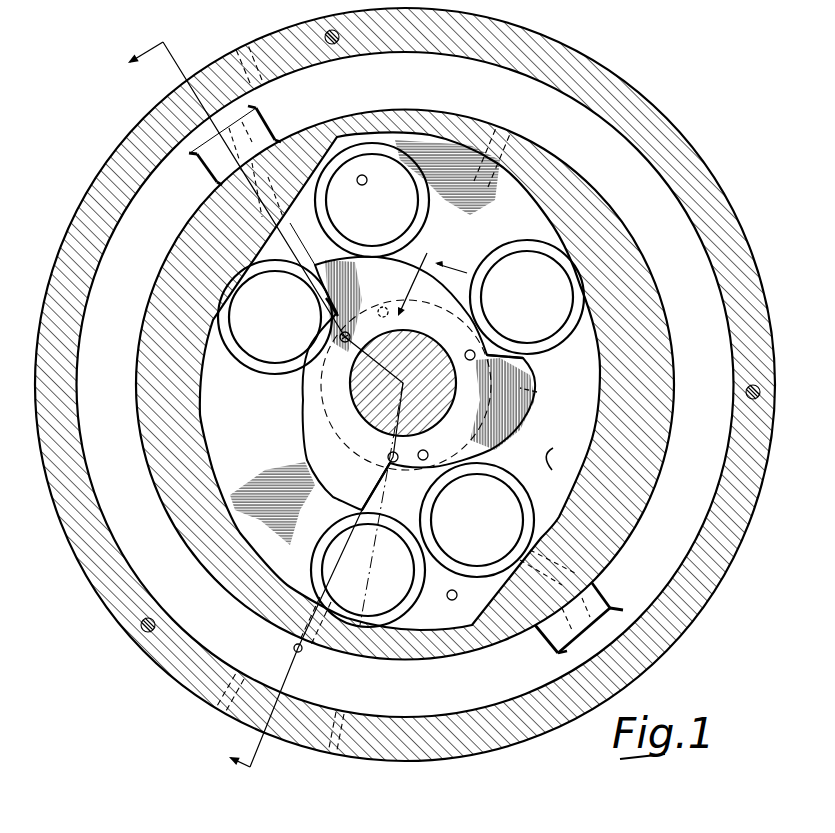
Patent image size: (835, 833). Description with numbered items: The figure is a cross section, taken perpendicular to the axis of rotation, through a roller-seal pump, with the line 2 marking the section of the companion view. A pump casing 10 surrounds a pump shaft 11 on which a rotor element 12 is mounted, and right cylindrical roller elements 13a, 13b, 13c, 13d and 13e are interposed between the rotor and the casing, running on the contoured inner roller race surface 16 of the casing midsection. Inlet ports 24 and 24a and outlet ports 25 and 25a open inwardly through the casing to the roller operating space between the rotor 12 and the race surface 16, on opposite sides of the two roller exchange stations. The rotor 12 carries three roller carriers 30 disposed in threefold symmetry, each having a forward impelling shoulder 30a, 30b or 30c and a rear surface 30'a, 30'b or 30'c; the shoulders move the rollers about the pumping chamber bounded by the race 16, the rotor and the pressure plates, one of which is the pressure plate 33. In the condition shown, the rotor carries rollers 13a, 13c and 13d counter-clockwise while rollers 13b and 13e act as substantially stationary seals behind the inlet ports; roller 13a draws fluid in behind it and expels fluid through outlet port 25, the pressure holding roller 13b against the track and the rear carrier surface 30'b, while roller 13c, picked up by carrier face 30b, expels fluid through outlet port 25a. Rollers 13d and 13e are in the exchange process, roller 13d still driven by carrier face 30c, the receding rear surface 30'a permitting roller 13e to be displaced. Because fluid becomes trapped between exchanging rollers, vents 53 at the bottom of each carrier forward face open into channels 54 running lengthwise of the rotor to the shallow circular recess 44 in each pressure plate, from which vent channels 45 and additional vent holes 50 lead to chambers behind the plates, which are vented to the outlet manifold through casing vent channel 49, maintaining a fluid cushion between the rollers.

The pump casing 10 is at (584, 51).
The pump shaft 11 is at (428, 418).
The rotor element 12 is at (432, 279).
The roller element 13a is at (511, 253).
The roller element 13b is at (391, 246).
The roller element 13c is at (240, 352).
The roller element 13d is at (395, 530).
The roller element 13e is at (500, 480).
The inner roller race surface 16 is at (205, 399).
The inlet port 24 is at (258, 107).
The inlet port 24a is at (612, 574).
The outlet port 25 is at (522, 146).
The outlet port 25a is at (293, 625).
The roller carrier 30 is at (432, 378).
The impelling shoulder 30a is at (523, 358).
The impelling shoulder 30b is at (330, 307).
The impelling shoulder 30c is at (374, 500).
The rear carrier surface 30'a is at (506, 417).
The rear carrier surface 30'b is at (447, 201).
The rear carrier surface 30'c is at (294, 402).
The pressure plate 33 is at (561, 456).
The circular recess 44 is at (326, 432).
The vent channel 45 is at (388, 306).
The vent channel 49 is at (301, 652).
The vent hole 50 is at (362, 185).
The vent 53 is at (537, 393).
The channel 54 is at (467, 350).
The section line 2 is at (250, 408).